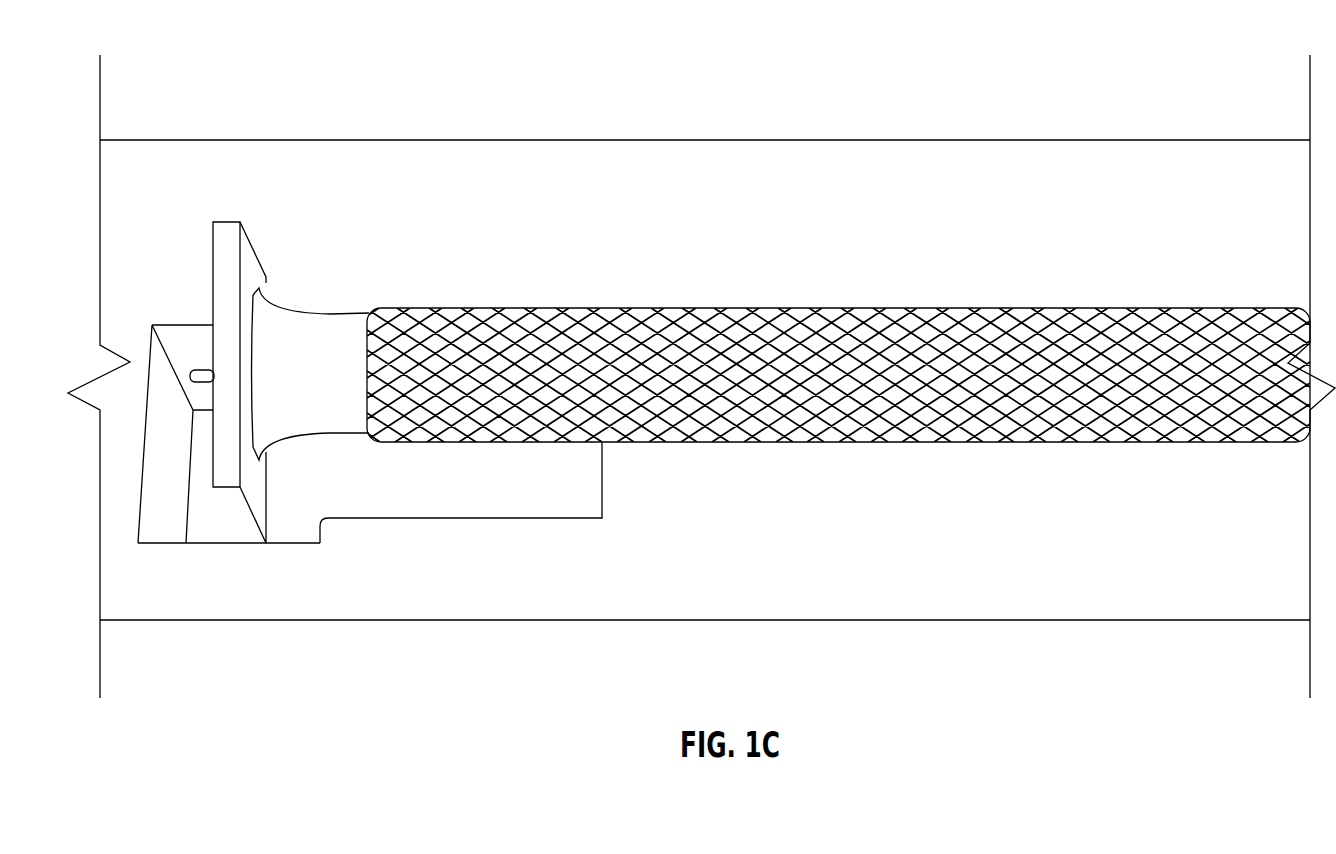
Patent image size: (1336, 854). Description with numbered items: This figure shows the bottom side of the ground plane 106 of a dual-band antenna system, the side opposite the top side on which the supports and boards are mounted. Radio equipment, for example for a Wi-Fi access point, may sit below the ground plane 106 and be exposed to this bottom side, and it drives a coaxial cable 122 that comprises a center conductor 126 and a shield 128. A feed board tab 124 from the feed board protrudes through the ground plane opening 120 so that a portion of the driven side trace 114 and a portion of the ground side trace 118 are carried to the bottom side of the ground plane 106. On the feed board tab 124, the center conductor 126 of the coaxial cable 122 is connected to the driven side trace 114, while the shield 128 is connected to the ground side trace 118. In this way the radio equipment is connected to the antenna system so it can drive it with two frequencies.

The ground plane 106 is at (566, 155).
The driven side trace 114 is at (213, 232).
The ground side trace 118 is at (252, 262).
The ground plane opening 120 is at (305, 532).
The coaxial cable 122 is at (768, 272).
The feed board tab 124 is at (250, 533).
The center conductor 126 is at (207, 372).
The shield 128 is at (1007, 308).